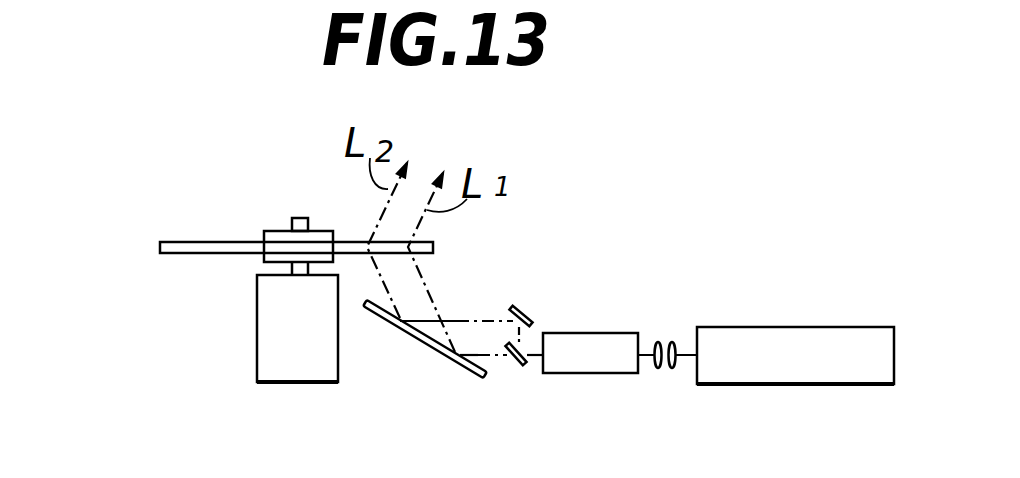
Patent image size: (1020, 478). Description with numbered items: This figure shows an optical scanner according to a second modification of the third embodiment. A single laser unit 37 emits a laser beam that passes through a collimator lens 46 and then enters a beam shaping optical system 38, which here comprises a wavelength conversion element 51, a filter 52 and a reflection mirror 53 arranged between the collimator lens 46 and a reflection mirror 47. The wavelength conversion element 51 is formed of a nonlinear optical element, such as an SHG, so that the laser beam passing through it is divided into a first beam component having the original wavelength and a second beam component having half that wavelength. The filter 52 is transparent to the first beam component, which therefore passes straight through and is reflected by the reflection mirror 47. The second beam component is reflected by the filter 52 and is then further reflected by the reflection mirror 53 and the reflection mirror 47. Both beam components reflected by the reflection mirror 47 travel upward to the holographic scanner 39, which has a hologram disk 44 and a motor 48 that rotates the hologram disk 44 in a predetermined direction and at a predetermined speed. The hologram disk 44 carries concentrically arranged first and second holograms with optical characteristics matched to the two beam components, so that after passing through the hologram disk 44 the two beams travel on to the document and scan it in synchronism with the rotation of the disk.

The laser unit 37 is at (780, 327).
The beam shaping optical system 38 is at (642, 383).
The holographic scanner 39 is at (202, 287).
The hologram disk 44 is at (200, 241).
The collimator lens 46 is at (663, 338).
The reflection mirror 47 is at (403, 340).
The motor 48 is at (278, 353).
The wavelength conversion element 51 is at (607, 333).
The filter 52 is at (510, 361).
The reflection mirror 53 is at (530, 318).